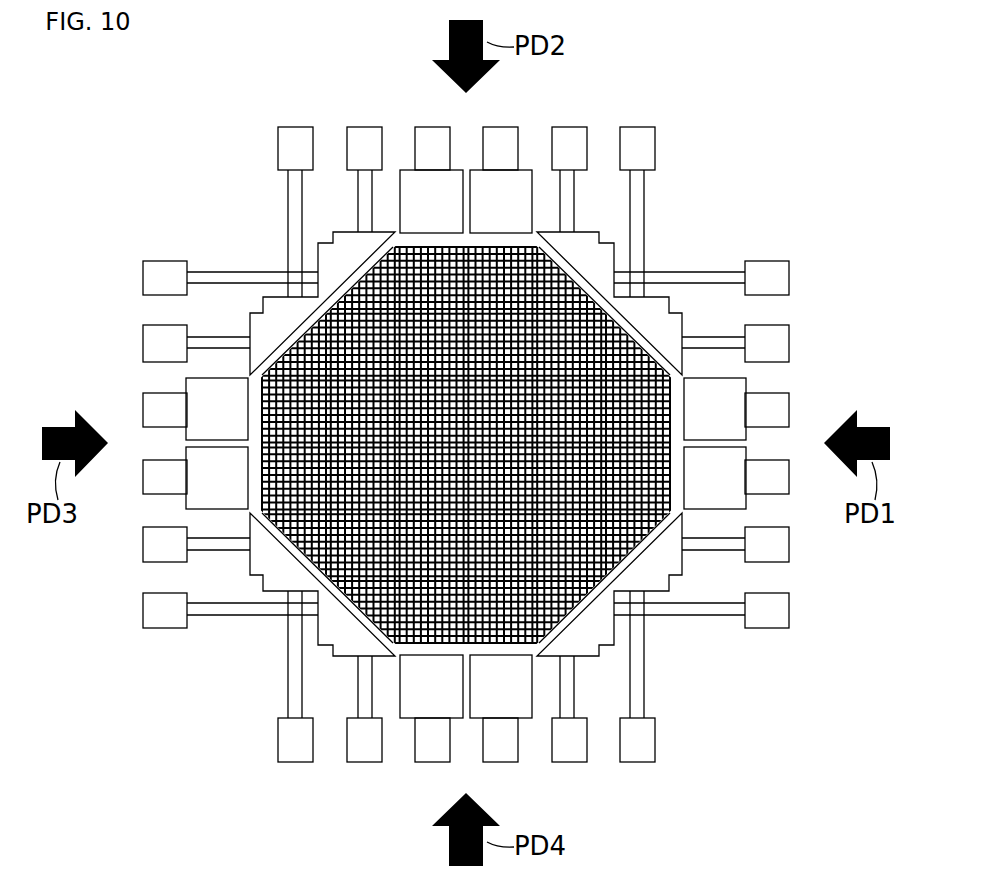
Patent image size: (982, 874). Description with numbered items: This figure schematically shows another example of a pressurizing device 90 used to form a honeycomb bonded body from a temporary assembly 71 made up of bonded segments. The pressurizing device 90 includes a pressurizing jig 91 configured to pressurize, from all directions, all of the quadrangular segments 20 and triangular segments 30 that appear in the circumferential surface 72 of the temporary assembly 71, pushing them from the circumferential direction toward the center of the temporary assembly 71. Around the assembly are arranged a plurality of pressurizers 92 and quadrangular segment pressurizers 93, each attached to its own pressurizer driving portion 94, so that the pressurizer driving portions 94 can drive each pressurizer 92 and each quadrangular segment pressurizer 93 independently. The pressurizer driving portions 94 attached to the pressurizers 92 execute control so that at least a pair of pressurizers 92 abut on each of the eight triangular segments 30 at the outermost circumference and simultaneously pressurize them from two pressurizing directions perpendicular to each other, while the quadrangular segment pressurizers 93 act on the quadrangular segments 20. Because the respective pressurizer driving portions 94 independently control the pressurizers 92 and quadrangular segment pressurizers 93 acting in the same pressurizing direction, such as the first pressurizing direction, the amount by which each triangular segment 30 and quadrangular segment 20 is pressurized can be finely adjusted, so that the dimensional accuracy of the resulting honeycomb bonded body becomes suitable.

The quadrangular segment 20 is at (433, 245).
The triangular segment 30 is at (368, 280).
The temporary assembly 71 is at (658, 263).
The circumferential surface 72 is at (668, 497).
The pressurizing device 90 is at (722, 185).
The pressurizing jig 91 is at (650, 74).
The pressurizer 92 is at (257, 553).
The quadrangular segment pressurizer 93 is at (215, 408).
The pressurizer driving portion 94 is at (291, 140).